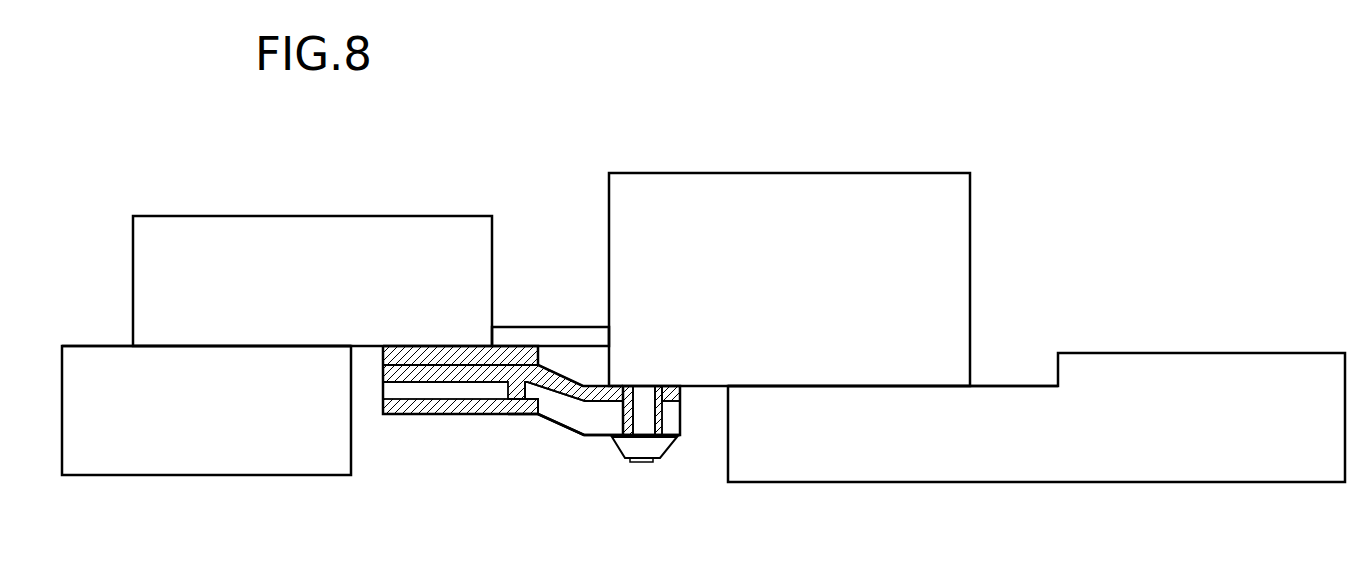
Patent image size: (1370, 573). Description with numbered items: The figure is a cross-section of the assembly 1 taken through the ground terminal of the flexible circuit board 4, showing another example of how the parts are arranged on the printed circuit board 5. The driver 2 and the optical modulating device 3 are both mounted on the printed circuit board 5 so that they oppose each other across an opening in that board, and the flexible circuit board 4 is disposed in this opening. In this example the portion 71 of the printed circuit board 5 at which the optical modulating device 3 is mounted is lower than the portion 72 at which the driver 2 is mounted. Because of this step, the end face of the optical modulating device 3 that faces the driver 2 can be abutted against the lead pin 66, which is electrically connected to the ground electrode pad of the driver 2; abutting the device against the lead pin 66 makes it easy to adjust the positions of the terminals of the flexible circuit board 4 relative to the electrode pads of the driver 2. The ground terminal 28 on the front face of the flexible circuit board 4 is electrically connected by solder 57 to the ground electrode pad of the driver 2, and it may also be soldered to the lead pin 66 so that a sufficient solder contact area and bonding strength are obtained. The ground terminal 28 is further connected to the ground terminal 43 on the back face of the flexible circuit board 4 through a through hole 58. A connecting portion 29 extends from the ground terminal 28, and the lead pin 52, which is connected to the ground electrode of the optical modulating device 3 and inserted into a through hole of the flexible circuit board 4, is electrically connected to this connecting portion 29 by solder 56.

The electronic device 1 is at (588, 97).
The driver 2 is at (148, 216).
The optical modulating device 3 is at (948, 173).
The flexible circuit board 4 is at (531, 350).
The printed circuit board 5 is at (75, 346).
The ground terminal 28 is at (475, 370).
The connecting portion 29 is at (583, 436).
The ground terminal 43 is at (412, 415).
The lead pin 52 is at (643, 393).
The solder 56 is at (660, 430).
The solder 57 is at (412, 346).
The through hole 58 is at (517, 416).
The lead pin 66 is at (551, 327).
The portion 71 is at (1005, 386).
The portion 72 is at (108, 346).